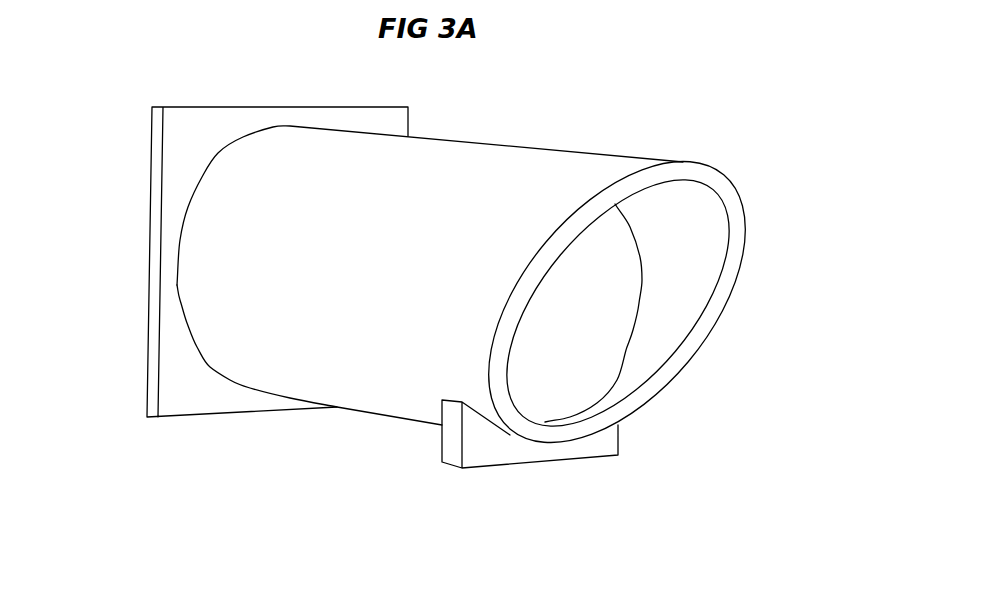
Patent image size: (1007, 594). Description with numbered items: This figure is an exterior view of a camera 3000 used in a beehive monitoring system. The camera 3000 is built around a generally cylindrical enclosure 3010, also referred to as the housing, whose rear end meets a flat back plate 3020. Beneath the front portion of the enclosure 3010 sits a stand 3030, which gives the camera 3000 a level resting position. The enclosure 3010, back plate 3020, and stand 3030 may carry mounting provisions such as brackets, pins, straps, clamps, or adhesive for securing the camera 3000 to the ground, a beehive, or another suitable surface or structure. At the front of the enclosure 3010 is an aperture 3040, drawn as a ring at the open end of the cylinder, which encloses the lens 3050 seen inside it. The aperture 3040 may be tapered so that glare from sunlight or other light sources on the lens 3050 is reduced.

The camera 3000 is at (453, 320).
The enclosure 3010 is at (487, 143).
The back plate 3020 is at (200, 420).
The stand 3030 is at (555, 463).
The aperture 3040 is at (737, 225).
The lens 3050 is at (583, 350).